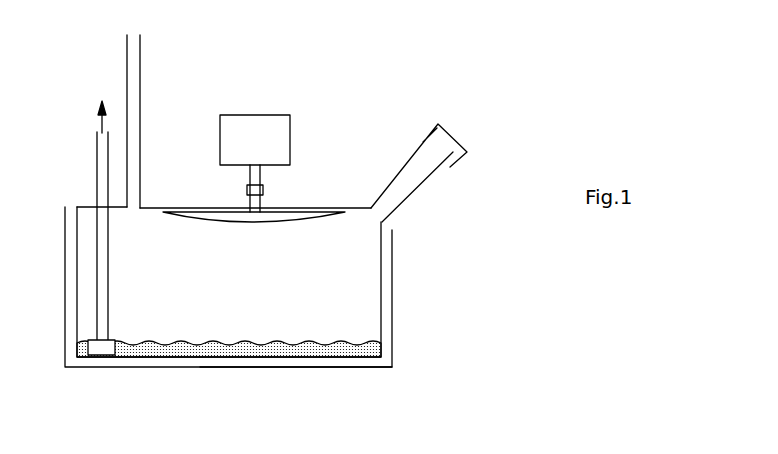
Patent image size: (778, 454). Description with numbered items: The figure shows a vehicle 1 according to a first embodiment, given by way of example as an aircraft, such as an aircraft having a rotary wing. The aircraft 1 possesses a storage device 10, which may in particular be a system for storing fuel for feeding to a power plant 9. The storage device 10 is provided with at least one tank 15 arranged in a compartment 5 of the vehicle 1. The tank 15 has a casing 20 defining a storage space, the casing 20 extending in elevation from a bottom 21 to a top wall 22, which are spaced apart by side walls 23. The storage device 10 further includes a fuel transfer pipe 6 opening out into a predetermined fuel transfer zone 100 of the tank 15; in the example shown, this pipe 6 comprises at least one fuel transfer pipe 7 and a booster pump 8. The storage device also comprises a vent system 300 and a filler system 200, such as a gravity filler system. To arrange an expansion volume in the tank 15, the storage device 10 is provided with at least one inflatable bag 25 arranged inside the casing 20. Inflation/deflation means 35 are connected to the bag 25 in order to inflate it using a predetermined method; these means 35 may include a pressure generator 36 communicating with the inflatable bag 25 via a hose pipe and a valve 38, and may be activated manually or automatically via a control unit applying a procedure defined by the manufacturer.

The vehicle 1 is at (590, 72).
The compartment 5 is at (393, 262).
The fuel transfer pipe 6 is at (97, 172).
The fuel transfer pipe 7 is at (108, 228).
The booster pump 8 is at (110, 340).
The power plant 9 is at (103, 103).
The storage device 10 is at (463, 233).
The tank 15 is at (283, 290).
The casing 20 is at (157, 200).
The bottom 21 is at (356, 360).
The top wall 22 is at (333, 207).
The side walls 23 is at (381, 298).
The inflatable bag 25 is at (196, 220).
The inflation/deflation means 35 is at (203, 112).
The pressure generator 36 is at (276, 115).
The valve 38 is at (265, 190).
The fuel transfer zone 100 is at (133, 327).
The filler system 200 is at (474, 129).
The vent system 300 is at (142, 50).